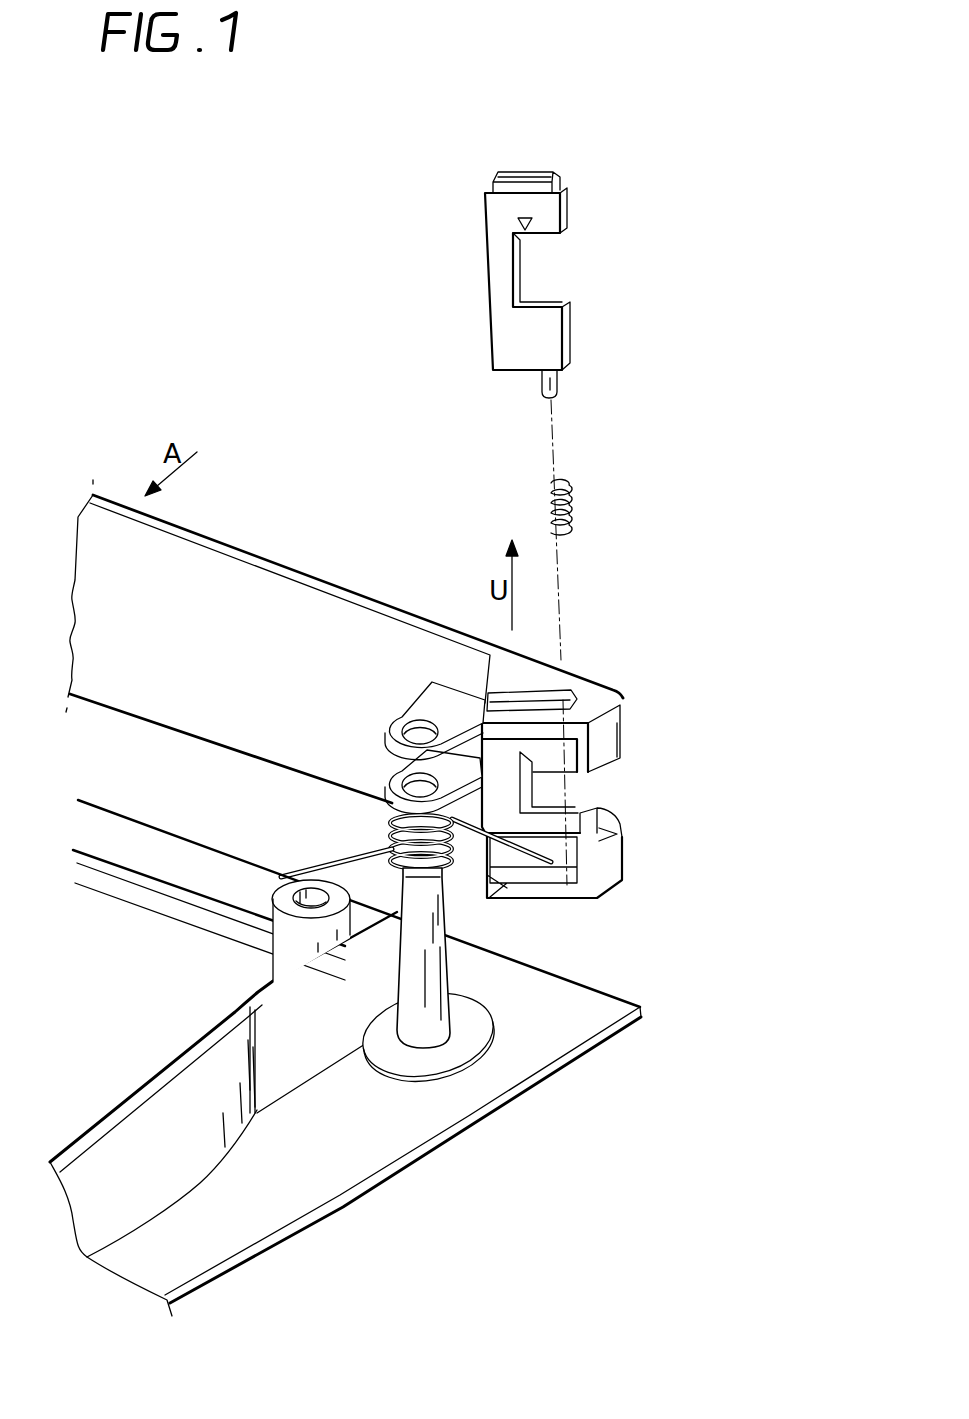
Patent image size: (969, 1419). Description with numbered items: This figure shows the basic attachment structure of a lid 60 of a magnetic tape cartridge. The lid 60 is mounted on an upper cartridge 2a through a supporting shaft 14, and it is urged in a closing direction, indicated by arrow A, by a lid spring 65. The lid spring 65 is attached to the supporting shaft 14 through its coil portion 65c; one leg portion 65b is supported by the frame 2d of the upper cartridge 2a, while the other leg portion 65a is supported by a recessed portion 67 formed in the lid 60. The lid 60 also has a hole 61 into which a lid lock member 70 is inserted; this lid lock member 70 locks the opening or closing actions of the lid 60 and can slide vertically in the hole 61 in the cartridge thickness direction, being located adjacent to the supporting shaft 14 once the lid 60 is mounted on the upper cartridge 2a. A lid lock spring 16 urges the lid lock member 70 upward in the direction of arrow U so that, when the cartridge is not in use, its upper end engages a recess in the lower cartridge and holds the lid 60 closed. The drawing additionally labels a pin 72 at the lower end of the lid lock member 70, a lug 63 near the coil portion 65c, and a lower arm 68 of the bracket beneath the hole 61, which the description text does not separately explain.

The lid lock member 70 is at (572, 180).
The pin of slider 72 is at (560, 388).
The lid lock spring 16 is at (568, 505).
The lid 60 is at (265, 582).
The hole 61 is at (535, 690).
The upper lug 63 is at (396, 721).
The coil portion 65c is at (384, 796).
The lid spring 65 is at (357, 842).
The leg portion 65b is at (316, 868).
The leg portion 65a is at (553, 862).
The recessed portion 67 is at (595, 805).
The lower arm of bracket 68 is at (510, 862).
The supporting shaft 14 is at (433, 980).
The frame 2d is at (317, 1045).
The upper cartridge 2a is at (347, 1138).